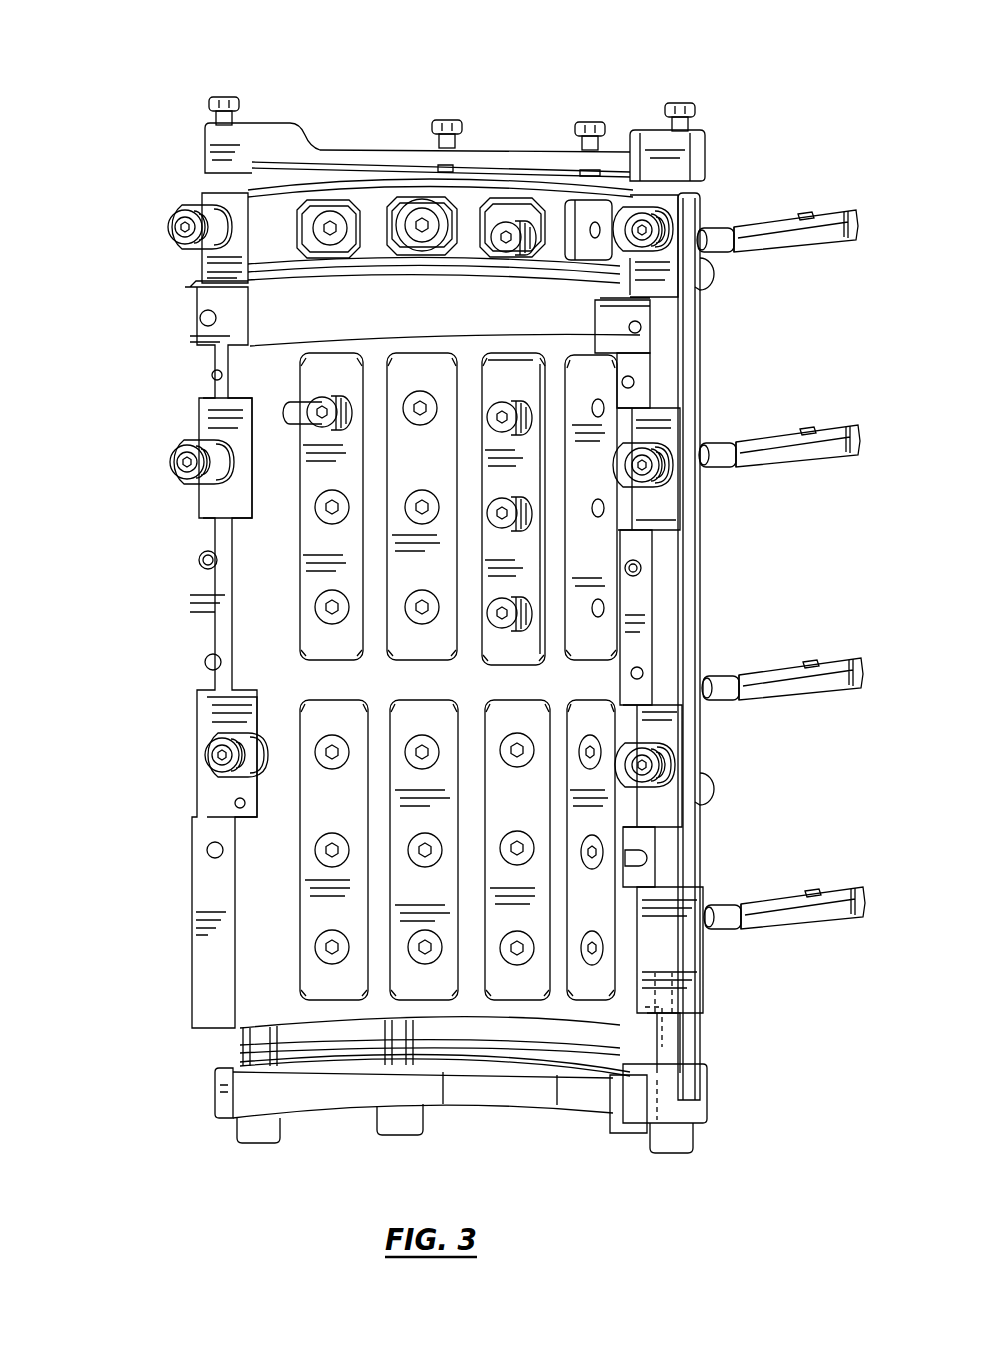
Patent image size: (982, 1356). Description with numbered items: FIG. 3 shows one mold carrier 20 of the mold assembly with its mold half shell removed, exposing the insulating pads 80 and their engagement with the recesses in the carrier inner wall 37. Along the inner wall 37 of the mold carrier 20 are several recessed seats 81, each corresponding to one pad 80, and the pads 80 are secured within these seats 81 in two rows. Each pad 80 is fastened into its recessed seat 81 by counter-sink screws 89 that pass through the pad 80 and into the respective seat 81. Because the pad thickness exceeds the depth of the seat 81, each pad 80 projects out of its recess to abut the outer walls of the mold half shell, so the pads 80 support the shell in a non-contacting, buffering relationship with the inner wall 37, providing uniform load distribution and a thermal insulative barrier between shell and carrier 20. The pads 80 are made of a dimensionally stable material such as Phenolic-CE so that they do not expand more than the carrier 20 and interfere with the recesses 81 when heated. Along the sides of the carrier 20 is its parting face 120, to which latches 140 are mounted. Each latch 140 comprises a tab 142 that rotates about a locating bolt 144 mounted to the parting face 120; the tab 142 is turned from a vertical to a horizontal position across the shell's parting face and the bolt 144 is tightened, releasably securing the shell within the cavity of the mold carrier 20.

The mold carrier 20 is at (597, 90).
The carrier inner wall 37 is at (235, 535).
The insulating pad 80 is at (312, 362).
The recessed seat 81 is at (450, 245).
The counter-sink screw 89 is at (324, 246).
The parting face 120 is at (635, 203).
The latch 140 is at (185, 207).
The tab 142 is at (200, 255).
The locating bolt 144 is at (173, 227).